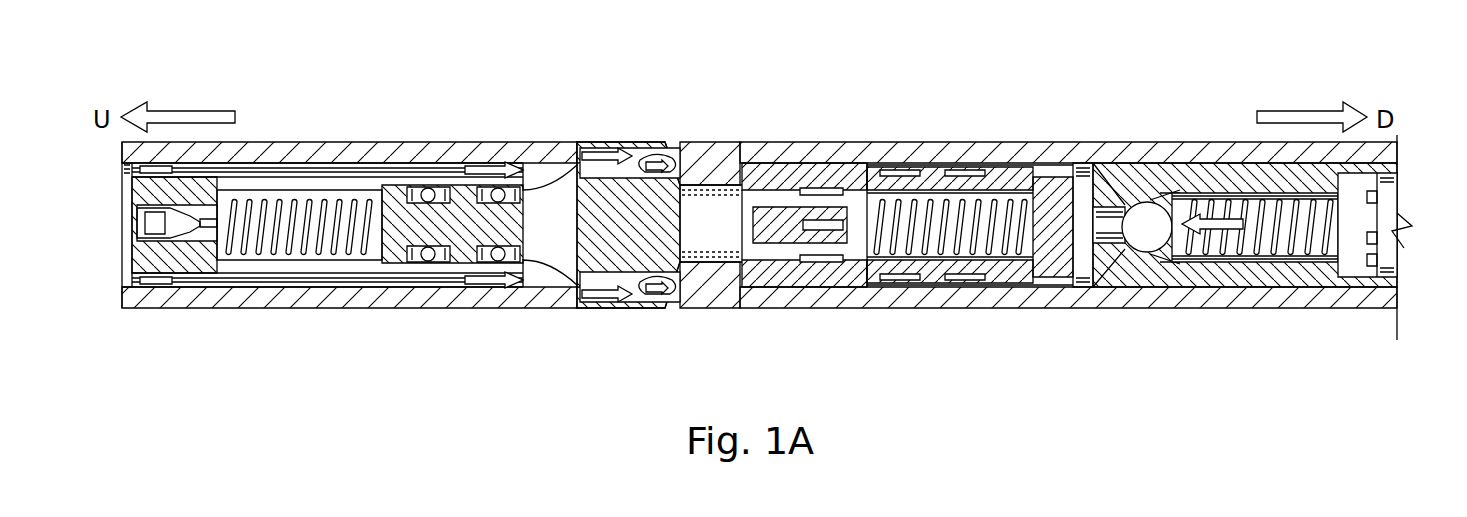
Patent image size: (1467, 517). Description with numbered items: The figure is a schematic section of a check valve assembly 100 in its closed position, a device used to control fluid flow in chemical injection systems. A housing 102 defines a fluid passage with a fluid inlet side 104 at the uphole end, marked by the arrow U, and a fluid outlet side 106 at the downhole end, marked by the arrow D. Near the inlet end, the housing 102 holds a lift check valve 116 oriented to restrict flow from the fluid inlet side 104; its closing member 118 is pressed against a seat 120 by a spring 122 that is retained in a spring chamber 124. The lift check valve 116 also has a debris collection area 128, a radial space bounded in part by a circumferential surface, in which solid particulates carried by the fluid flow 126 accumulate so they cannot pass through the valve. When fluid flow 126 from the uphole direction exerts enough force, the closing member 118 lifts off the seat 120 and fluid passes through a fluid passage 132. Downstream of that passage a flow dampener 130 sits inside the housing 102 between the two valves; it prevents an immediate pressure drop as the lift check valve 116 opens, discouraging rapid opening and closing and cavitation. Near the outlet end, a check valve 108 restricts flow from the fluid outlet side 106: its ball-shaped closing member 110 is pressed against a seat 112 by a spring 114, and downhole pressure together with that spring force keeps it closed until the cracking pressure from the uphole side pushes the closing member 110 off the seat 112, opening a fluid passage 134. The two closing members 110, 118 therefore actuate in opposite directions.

The check valve assembly 100 is at (1177, 66).
The housing 102 is at (1167, 142).
The fluid inlet side 104 is at (122, 220).
The fluid outlet side 106 is at (1392, 257).
The check valve 108 is at (1162, 283).
The closing member 110 is at (1155, 237).
The seat 112 is at (1125, 172).
The spring 114 is at (1262, 246).
The lift check valve 116 is at (150, 257).
The closing member 118 is at (577, 238).
The seat 120 is at (702, 165).
The spring 122 is at (262, 250).
The spring chamber 124 is at (357, 260).
The fluid flow 126 is at (186, 286).
The debris collection area 128 is at (672, 150).
The flow dampener 130 is at (925, 172).
The fluid passage 132 is at (714, 245).
The fluid passage 134 is at (1105, 232).